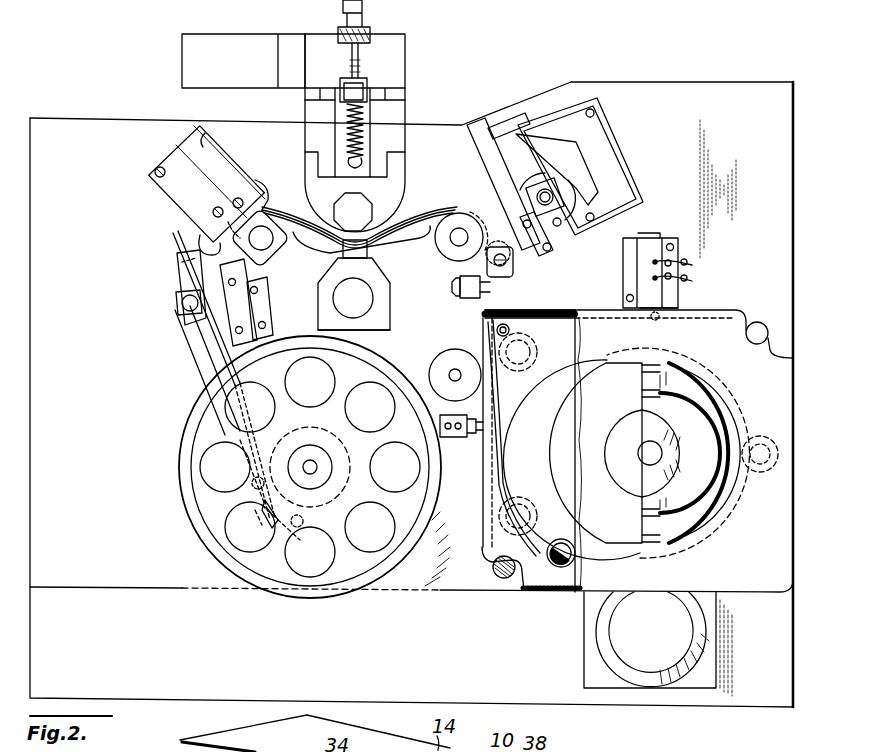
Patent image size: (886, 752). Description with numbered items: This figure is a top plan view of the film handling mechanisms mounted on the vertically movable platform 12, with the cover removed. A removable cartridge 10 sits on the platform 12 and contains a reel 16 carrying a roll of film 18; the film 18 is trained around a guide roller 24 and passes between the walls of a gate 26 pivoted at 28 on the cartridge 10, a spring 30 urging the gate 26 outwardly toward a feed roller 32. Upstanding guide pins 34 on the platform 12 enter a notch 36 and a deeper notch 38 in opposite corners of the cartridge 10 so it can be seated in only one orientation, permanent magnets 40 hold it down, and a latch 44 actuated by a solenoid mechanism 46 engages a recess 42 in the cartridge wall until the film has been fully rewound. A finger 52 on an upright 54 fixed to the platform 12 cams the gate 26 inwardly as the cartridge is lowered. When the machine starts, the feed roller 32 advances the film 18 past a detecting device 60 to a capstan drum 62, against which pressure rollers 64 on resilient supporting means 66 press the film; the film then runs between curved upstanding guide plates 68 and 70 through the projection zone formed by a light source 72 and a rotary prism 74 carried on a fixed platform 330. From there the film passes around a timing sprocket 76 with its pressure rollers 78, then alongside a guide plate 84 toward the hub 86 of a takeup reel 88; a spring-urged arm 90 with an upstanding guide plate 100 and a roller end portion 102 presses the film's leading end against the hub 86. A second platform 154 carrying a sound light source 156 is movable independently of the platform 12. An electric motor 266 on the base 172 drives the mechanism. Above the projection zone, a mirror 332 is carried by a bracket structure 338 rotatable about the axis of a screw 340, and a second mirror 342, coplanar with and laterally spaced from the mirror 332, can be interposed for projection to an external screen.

The cartridge 10 is at (786, 425).
The platform 12 is at (782, 270).
The reel 16 is at (577, 428).
The film 18 is at (205, 248).
The guide roller 24 is at (575, 556).
The gate 26 is at (499, 424).
The pivot 28 is at (512, 316).
The spring 30 is at (527, 318).
The feed roller 32 is at (455, 352).
The guide pins 34 is at (492, 568).
The notch 36 is at (482, 565).
The notch 38 is at (750, 328).
The permanent magnets 40 is at (538, 356).
The recess 42 is at (660, 318).
The latch 44 is at (668, 306).
The solenoid mechanism 46 is at (658, 240).
The finger 52 is at (468, 440).
The upright 54 is at (440, 428).
The detecting device 60 is at (455, 289).
The capstan drum 62 is at (446, 258).
The pressure rollers 64 is at (475, 185).
The supporting means 66 is at (553, 248).
The guide plate 68 is at (438, 215).
The guide plate 70 is at (398, 228).
The light source 72 is at (318, 298).
The rotary prism 74 is at (358, 210).
The timing sprocket 76 is at (282, 250).
The pressure rollers 78 is at (262, 185).
The guide plate 84 is at (257, 320).
The hub 86 is at (326, 462).
The takeup reel 88 is at (330, 597).
The arm 90 is at (200, 347).
The guide plate 100 is at (182, 337).
The roller end portion 102 is at (271, 506).
The second platform 154 is at (605, 140).
The light source 156 is at (555, 182).
The base 172 is at (722, 700).
The electric motor 266 is at (651, 607).
The fixed platform 330 is at (384, 328).
The mirror 332 is at (400, 58).
The bracket structure 338 is at (305, 100).
The screw 340 is at (352, 74).
The second mirror 342 is at (212, 48).